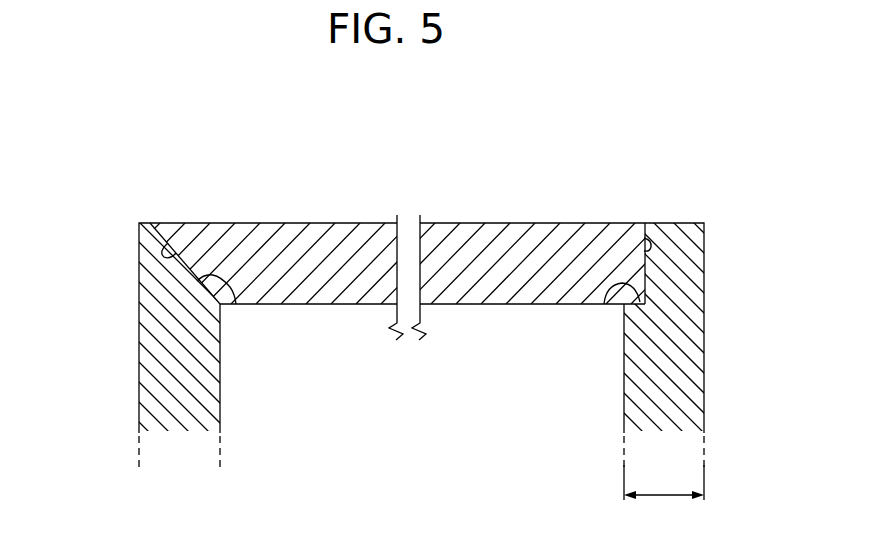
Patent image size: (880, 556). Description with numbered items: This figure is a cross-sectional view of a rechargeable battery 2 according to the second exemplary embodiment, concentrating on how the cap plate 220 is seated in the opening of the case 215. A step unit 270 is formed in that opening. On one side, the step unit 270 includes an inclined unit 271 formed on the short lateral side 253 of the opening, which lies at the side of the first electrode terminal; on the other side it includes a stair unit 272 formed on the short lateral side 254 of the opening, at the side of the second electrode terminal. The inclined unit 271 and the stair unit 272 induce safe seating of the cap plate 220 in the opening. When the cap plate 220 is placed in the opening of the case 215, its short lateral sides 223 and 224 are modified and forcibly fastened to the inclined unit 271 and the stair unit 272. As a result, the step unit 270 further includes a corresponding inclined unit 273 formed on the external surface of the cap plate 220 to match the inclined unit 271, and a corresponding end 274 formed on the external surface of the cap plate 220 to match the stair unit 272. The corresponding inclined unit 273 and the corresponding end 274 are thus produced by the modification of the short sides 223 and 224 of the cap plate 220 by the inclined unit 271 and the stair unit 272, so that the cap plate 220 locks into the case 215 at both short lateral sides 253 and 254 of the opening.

The rechargeable battery 2 is at (397, 119).
The case 215 is at (122, 486).
The cap plate 220 is at (324, 233).
The short lateral side of the cap plate 223 is at (146, 215).
The short lateral side of the cap plate 224 is at (647, 212).
The short lateral side of the opening 253 is at (160, 358).
The short lateral side of the opening 254 is at (685, 353).
The step unit 270 is at (556, 158).
The inclined unit 271 is at (236, 304).
The stair unit 272 is at (604, 304).
The corresponding inclined unit 273 is at (168, 243).
The corresponding end 274 is at (644, 238).